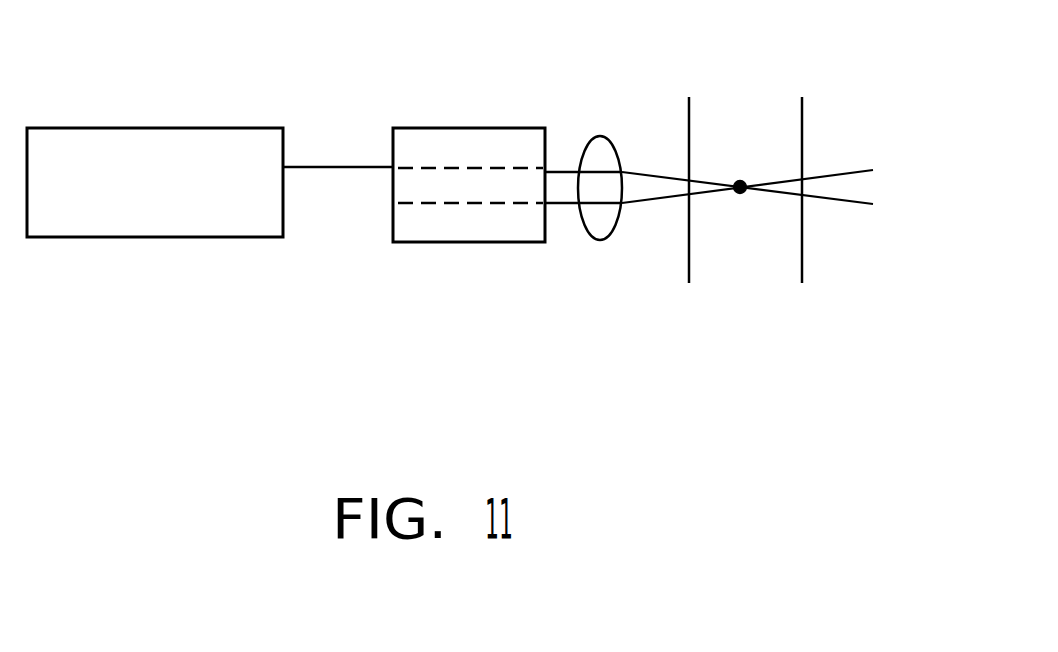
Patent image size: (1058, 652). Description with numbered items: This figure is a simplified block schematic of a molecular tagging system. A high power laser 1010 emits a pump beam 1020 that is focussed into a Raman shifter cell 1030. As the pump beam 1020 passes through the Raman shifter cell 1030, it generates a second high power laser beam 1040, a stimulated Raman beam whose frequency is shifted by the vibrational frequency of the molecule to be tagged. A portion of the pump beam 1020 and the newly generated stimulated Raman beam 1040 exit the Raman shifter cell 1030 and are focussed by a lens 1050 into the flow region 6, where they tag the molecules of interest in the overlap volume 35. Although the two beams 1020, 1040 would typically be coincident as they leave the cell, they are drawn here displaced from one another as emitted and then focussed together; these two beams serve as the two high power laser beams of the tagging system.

The high power laser 1010 is at (247, 238).
The pump beam 1020 is at (349, 167).
The Raman shifter cell 1030 is at (407, 128).
The second high power laser beam 1040 is at (557, 205).
The lens 1050 is at (600, 240).
The overlap volume 35 is at (740, 193).
The flow region 6 is at (762, 132).